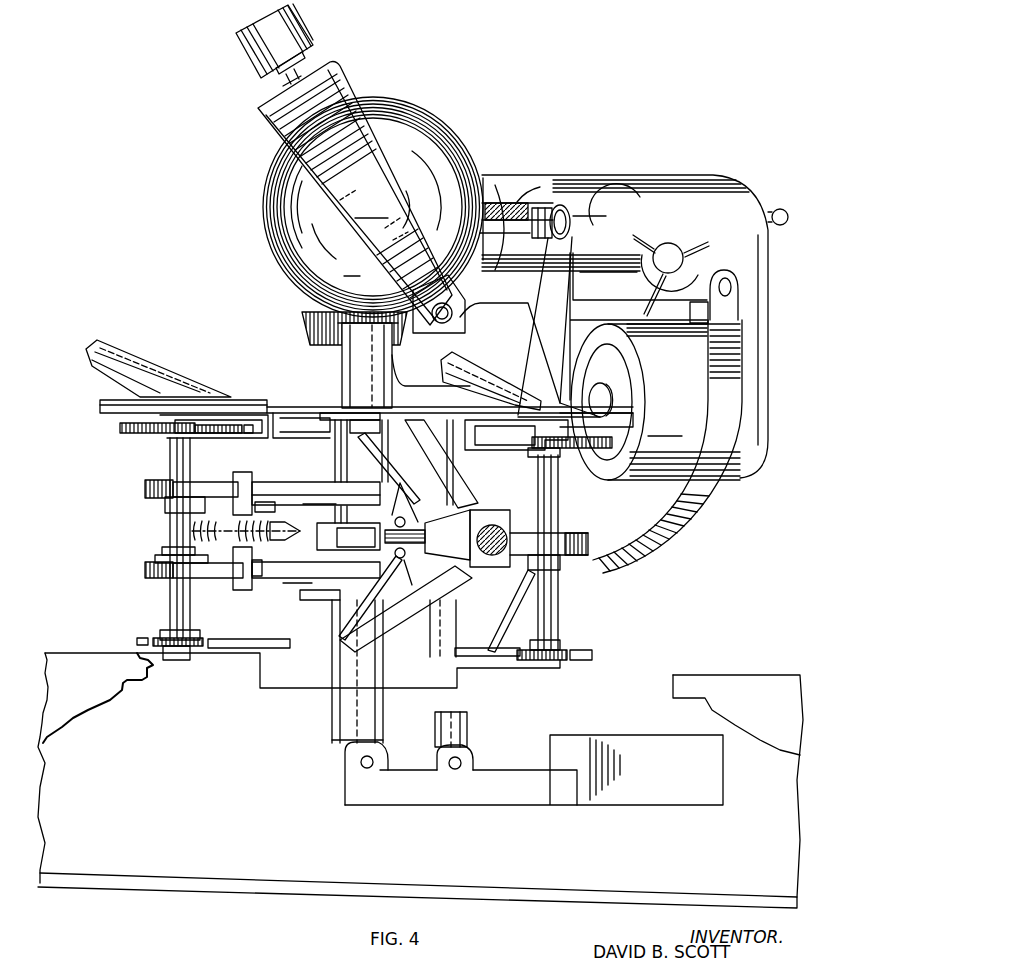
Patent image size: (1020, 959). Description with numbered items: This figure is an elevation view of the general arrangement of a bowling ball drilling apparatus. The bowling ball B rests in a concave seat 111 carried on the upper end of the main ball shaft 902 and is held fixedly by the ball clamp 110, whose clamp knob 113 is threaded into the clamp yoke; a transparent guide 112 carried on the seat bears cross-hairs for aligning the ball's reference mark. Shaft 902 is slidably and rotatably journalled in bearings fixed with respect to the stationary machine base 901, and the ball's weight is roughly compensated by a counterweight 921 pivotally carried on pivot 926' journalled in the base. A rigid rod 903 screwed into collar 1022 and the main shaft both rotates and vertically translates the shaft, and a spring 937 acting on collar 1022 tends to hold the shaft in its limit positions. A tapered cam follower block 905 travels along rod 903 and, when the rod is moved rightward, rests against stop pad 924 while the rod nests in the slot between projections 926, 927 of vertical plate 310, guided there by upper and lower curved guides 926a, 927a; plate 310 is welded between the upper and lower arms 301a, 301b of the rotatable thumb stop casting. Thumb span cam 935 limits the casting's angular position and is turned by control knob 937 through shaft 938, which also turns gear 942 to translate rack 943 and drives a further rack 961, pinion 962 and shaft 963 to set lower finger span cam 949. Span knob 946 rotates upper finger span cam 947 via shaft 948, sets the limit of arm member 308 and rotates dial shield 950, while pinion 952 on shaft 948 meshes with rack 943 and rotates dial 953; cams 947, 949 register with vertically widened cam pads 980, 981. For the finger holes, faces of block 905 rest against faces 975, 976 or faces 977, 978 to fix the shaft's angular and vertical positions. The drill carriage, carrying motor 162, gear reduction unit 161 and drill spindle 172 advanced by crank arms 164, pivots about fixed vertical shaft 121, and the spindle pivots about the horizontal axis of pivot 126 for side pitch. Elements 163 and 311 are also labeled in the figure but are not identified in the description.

The ball clamp 110 is at (361, 198).
The concave seat 111 is at (303, 320).
The transparent guide 112 is at (470, 150).
The clamp knob 113 is at (300, 38).
The fixed vertical shaft 121 is at (440, 645).
The pivot 126 is at (560, 212).
The gear reduction unit 161 is at (762, 330).
The motor 162 is at (655, 402).
The hub 163 is at (664, 243).
The crank arms 164 is at (686, 242).
The drill spindle assembly 172 is at (544, 208).
The upper arm 301a is at (440, 485).
The lower arm 301b is at (355, 660).
The arm member 308 is at (316, 493).
The vertical plate 310 is at (368, 462).
The bar 311 is at (316, 573).
The machine base 901 is at (60, 650).
The main ball shaft 902 is at (360, 370).
The rigid rod 903 is at (345, 652).
The tapered cam follower block 905 is at (505, 512).
The counterweight 921 is at (645, 790).
The stop pad 924 is at (460, 575).
The projection 926 is at (451, 534).
The upper curved guide 926a is at (360, 527).
The pivot 926' is at (478, 790).
The projection 927 is at (408, 556).
The lower curved guide 927a is at (335, 605).
The thumb span cam 935 is at (590, 560).
The control knob 937 is at (448, 362).
The shaft 938 is at (548, 615).
The gear 942 is at (580, 450).
The rack 943 is at (315, 425).
The span knob 946 is at (88, 345).
The upper finger span cam 947 is at (147, 490).
The shaft 948 is at (178, 465).
The lower finger span cam 949 is at (147, 570).
The dial shield 950 is at (245, 415).
The pinion 952 is at (120, 428).
The dial 953 is at (100, 403).
The rack 961 is at (272, 650).
The pinion 962 is at (172, 648).
The shaft 963 is at (160, 605).
The face 975 is at (160, 552).
The face 976 is at (252, 590).
The face 977 is at (175, 482).
The face 978 is at (265, 500).
The cam pad 980 is at (243, 477).
The cam pad 981 is at (238, 595).
The collar 1022 is at (349, 536).